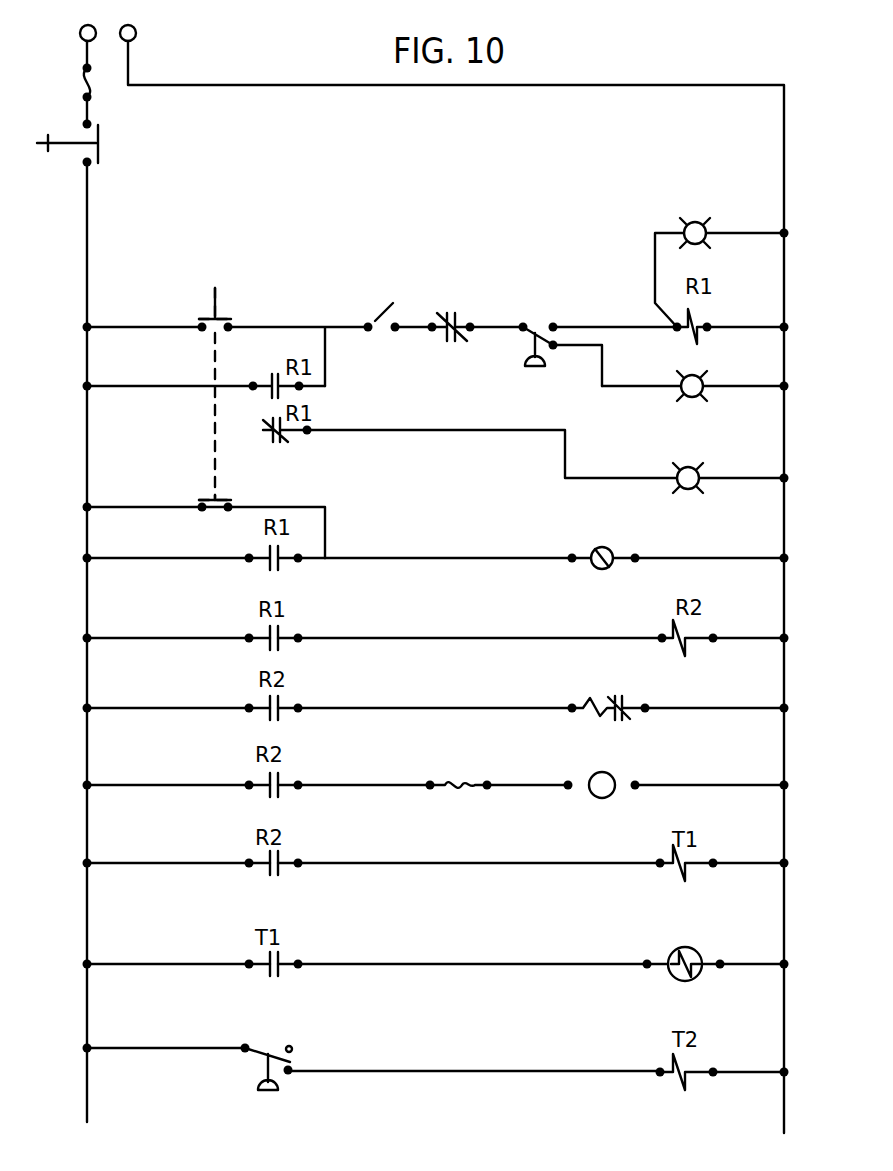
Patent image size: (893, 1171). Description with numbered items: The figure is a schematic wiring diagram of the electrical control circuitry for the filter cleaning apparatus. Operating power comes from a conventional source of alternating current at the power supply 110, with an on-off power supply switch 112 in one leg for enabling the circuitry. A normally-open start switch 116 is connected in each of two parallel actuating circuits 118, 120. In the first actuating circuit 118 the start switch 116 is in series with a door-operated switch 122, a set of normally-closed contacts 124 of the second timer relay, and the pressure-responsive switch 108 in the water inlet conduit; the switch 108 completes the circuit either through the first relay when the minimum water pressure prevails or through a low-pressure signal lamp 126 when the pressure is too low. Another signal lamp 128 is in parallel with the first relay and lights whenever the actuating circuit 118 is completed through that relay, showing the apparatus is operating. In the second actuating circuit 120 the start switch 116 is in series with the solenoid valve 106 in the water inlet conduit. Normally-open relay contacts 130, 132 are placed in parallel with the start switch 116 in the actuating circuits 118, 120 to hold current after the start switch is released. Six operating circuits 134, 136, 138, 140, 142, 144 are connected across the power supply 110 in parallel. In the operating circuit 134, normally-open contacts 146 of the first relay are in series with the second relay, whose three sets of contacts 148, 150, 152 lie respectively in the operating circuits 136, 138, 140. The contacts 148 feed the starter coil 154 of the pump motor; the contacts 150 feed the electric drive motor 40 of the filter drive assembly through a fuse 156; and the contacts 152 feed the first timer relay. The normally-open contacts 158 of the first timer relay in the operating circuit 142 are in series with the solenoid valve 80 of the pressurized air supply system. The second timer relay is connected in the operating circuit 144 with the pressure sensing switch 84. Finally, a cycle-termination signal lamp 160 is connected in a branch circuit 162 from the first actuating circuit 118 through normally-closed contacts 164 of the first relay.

The power supply 110 is at (108, 32).
The power supply switch 112 is at (48, 147).
The first actuating circuit 118 is at (125, 323).
The actuating start switch 116 is at (208, 316).
The door-operated switch 122 is at (384, 311).
The normally-closed contacts of timer relay T2 124 is at (463, 318).
The pressure-responsive switch 108 is at (531, 348).
The signal lamp 128 is at (709, 229).
The low-pressure signal lamp 126 is at (700, 393).
The cycle-termination signal lamp 160 is at (702, 470).
The normally-open contacts of relay R1 130 is at (270, 380).
The normally-closed contacts of relay R1 164 is at (268, 441).
The branch circuit 162 is at (385, 433).
The second actuating circuit 120 is at (343, 558).
The normally-open contacts of relay R1 132 is at (280, 567).
The solenoid valve 106 is at (610, 549).
The operating circuit 134 is at (145, 640).
The normally-open contacts of relay R1 146 is at (282, 633).
The operating circuit 136 is at (145, 710).
The normally-open contacts of relay R2 148 is at (282, 703).
The starter coil 154 is at (602, 700).
The operating circuit 138 is at (145, 787).
The normally-open contacts of relay R2 150 is at (282, 780).
The fuse 156 is at (463, 782).
The electric drive motor 40 is at (613, 775).
The operating circuit 140 is at (145, 865).
The normally-open contacts of relay R2 152 is at (282, 858).
The operating circuit 142 is at (145, 967).
The normally-open contacts of timer relay T1 158 is at (282, 958).
The solenoid valve 80 is at (675, 952).
The operating circuit 144 is at (135, 1050).
The pressure sensing switch 84 is at (292, 1066).